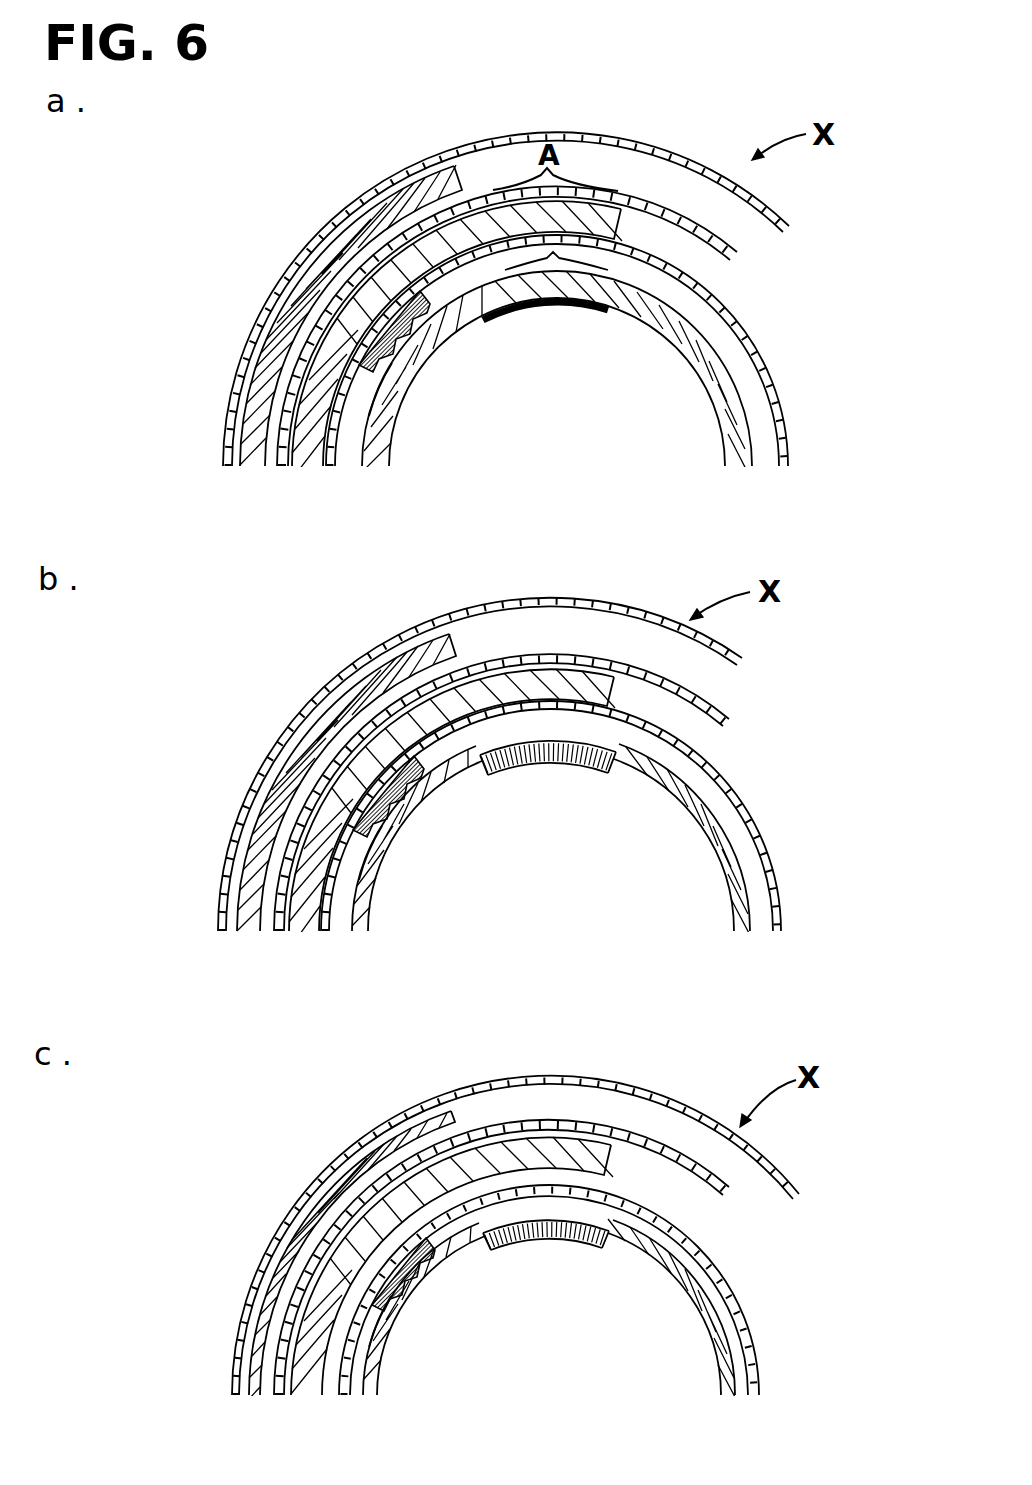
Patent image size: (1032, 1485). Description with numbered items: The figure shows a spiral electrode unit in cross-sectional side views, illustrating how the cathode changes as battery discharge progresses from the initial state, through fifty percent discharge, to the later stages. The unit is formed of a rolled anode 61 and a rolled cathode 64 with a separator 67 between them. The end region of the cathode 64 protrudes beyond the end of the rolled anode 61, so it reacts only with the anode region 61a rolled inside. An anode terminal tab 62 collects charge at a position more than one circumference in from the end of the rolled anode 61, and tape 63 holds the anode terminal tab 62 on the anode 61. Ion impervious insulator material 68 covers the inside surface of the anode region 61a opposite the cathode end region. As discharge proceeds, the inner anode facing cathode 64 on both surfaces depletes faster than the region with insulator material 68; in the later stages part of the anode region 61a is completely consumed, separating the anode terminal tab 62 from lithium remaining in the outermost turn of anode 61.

The anode 61 is at (258, 376).
The anode region 61a is at (567, 250).
The anode terminal tab 62 is at (405, 340).
The tape 63 is at (380, 362).
The cathode 64 is at (452, 232).
The separator 67 is at (306, 254).
The ion impervious insulator material 68 is at (572, 318).